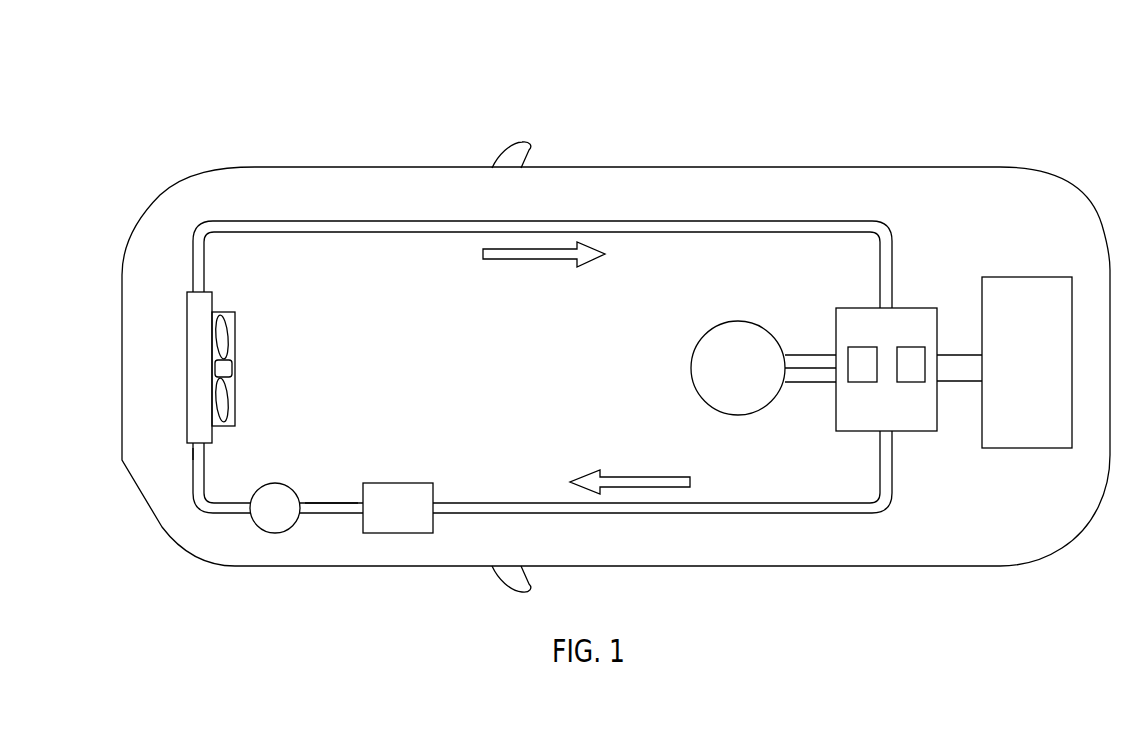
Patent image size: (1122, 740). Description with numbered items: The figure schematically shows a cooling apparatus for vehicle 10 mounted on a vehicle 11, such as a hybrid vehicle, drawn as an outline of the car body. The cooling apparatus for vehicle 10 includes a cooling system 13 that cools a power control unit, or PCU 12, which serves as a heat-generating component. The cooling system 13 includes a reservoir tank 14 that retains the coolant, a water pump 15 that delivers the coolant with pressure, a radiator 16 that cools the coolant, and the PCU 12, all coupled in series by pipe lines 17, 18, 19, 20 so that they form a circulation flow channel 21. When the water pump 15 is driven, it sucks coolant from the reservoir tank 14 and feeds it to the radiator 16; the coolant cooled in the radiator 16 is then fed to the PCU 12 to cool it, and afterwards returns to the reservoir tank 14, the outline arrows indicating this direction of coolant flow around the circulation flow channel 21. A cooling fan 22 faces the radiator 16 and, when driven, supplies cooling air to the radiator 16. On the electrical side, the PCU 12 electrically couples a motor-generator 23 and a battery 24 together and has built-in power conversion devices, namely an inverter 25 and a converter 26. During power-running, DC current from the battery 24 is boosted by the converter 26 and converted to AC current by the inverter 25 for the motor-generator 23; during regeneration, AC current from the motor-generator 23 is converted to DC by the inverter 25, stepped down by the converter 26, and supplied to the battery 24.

The cooling apparatus for vehicle 10 is at (141, 250).
The vehicle 11 is at (178, 85).
The power control unit (PCU) 12 is at (917, 308).
The cooling system 13 is at (184, 224).
The reservoir tank 14 is at (410, 483).
The water pump 15 is at (278, 483).
The radiator 16 is at (187, 342).
The pipe line 17 is at (327, 503).
The pipe line 18 is at (193, 468).
The pipe line 19 is at (395, 233).
The pipe line 20 is at (512, 503).
The circulation flow channel 21 is at (337, 238).
The cooling fan 22 is at (236, 338).
The motor-generator 23 is at (737, 320).
The battery 24 is at (1027, 277).
The inverter 25 is at (856, 383).
The converter 26 is at (909, 383).